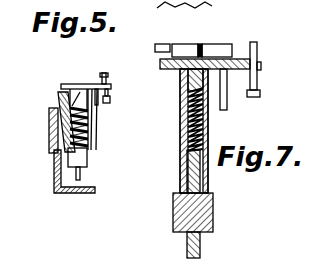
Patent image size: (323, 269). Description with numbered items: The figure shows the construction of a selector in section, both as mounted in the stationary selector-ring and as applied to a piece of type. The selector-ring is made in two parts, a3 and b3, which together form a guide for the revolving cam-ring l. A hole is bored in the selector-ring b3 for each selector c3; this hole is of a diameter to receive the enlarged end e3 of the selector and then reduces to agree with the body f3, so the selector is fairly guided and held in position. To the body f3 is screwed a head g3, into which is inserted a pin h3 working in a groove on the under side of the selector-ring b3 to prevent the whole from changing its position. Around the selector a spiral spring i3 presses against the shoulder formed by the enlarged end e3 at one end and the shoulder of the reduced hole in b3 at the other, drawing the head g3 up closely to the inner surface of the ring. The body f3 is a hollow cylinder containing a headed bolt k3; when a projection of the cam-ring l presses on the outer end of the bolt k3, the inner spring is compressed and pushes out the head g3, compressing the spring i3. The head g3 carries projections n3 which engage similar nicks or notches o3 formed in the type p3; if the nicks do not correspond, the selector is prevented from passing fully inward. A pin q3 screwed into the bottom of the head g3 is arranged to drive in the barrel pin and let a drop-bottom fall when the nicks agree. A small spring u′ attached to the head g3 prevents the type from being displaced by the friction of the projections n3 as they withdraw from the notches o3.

In FIG. 5, the selector-ring a3 is at (49, 115).
In FIG. 5, the selector-ring b3 is at (57, 97).
In FIG. 7, the selector c3 is at (201, 126).
In FIG. 5, the enlarged end of selector e3 is at (92, 163).
In FIG. 7, the enlarged end of selector e3 is at (214, 210).
In FIG. 5, the body of selector f3 is at (80, 92).
In FIG. 7, the body of selector f3 is at (172, 131).
In FIG. 5, the head g3 is at (72, 86).
In FIG. 7, the head g3 is at (179, 69).
In FIG. 5, the pin h3 is at (99, 104).
In FIG. 7, the pin h3 is at (228, 96).
In FIG. 5, the spiral spring i3 is at (97, 138).
In FIG. 7, the spiral spring i3 is at (181, 149).
In FIG. 5, the bolt k3 is at (80, 177).
In FIG. 7, the bolt k3 is at (201, 245).
In FIG. 5, the cam-ring l is at (74, 184).
In FIG. 5, the projections n3 is at (99, 67).
In FIG. 7, the projections n3 is at (184, 44).
In FIG. 7, the nicks or notches o3 is at (167, 45).
In FIG. 7, the type p3 is at (212, 35).
In FIG. 5, the pin q3 is at (111, 97).
In FIG. 7, the pin q3 is at (258, 48).
In FIG. 5, the small spring u′ is at (108, 83).
In FIG. 7, the small spring u′ is at (259, 55).